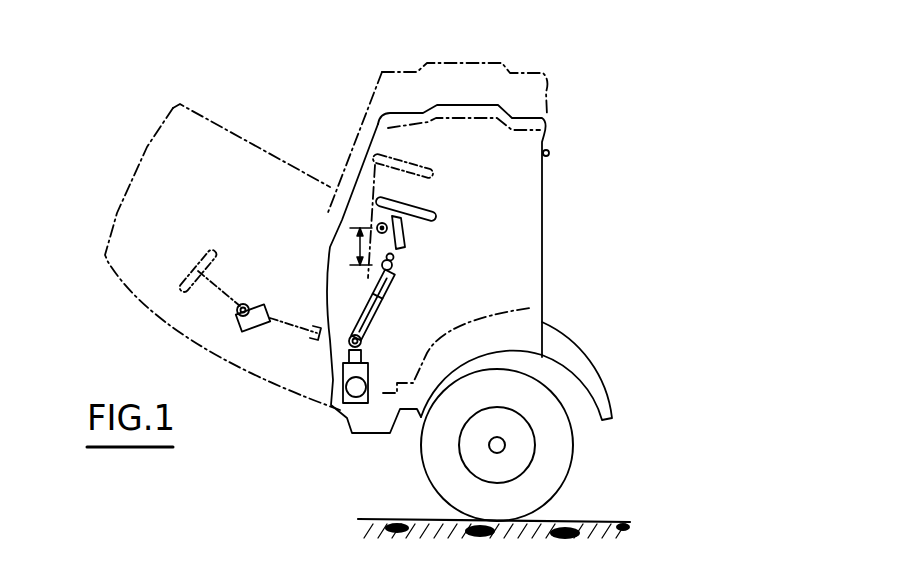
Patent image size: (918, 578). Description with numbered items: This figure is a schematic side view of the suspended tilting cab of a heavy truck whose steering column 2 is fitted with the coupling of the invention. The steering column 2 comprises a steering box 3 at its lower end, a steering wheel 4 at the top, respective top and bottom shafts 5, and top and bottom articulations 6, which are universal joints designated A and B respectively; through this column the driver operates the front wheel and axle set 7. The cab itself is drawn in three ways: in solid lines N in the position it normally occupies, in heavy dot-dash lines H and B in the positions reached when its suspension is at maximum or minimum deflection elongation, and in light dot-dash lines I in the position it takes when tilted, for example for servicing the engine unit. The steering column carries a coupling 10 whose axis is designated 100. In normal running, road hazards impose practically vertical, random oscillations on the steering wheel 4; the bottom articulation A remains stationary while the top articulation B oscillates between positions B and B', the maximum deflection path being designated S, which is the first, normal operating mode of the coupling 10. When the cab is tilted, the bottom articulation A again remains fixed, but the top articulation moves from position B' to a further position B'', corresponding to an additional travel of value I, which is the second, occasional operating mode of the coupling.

The steering column 2 is at (468, 227).
The steering box 3 is at (368, 370).
The steering wheel 4 is at (433, 203).
The top and bottom shafts 5 is at (418, 240).
The top and bottom articulations 6 is at (395, 272).
The front wheel and axle set 7 is at (571, 455).
The coupling 10 is at (385, 296).
The axis of the coupling 100 is at (386, 312).
The bottom articulation A is at (352, 336).
The top articulation B is at (492, 190).
The top articulation position B' is at (330, 215).
The top articulation position when cab tilted B'' is at (258, 277).
The cab position at maximum deflection elongation H is at (507, 73).
The tilted cab position / additional travel I is at (207, 117).
The cab normal position N is at (532, 108).
The maximum deflection path S is at (355, 246).